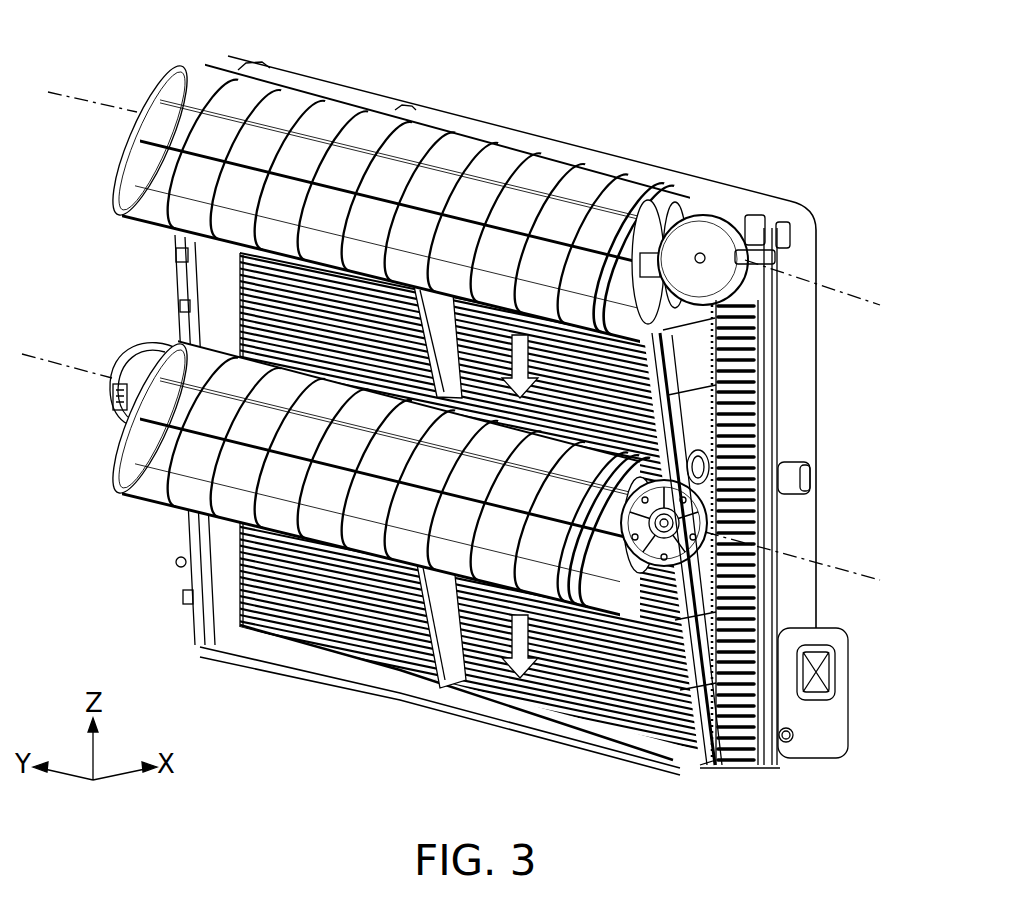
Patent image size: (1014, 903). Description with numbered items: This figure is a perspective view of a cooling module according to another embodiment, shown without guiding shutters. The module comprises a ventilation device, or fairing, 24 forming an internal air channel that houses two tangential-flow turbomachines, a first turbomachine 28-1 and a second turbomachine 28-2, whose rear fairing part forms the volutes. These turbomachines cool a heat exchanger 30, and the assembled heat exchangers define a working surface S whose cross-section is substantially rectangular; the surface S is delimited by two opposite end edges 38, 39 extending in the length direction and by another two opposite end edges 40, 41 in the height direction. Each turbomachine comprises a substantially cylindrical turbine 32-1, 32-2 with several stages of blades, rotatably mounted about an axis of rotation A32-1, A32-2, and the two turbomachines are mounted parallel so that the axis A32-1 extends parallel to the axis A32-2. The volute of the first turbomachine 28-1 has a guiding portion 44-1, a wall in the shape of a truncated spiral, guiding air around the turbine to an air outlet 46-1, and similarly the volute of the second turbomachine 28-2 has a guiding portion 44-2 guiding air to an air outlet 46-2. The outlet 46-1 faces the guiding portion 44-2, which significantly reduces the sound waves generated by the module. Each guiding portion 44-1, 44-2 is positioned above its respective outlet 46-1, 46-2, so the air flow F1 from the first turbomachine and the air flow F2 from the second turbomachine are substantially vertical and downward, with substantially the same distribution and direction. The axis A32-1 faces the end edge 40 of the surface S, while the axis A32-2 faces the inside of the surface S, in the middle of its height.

The ventilation device 24 is at (688, 360).
The first tangential-flow turbomachine 28-1 is at (394, 192).
The second tangential-flow turbomachine 28-2 is at (374, 559).
The heat exchanger 30 is at (273, 592).
The turbine of the first turbomachine 32-1 is at (573, 213).
The turbine of the second turbomachine 32-2 is at (402, 442).
The end edge 38 is at (477, 130).
The end edge 39 is at (790, 730).
The end edge 40 is at (253, 72).
The end edge 41 is at (797, 427).
The air guiding portion of the first volute 44-1 is at (330, 137).
The air guiding portion of the second volute 44-2 is at (418, 548).
The air outlet of the first turbomachine 46-1 is at (240, 290).
The air outlet of the second turbomachine 46-2 is at (177, 563).
The working surface S is at (583, 675).
The air flow from the first turbomachine F1 is at (537, 366).
The air flow from the second turbomachine F2 is at (537, 646).
The axis of rotation of the first turbine A32-1 is at (862, 290).
The axis of rotation of the second turbine A32-2 is at (862, 564).